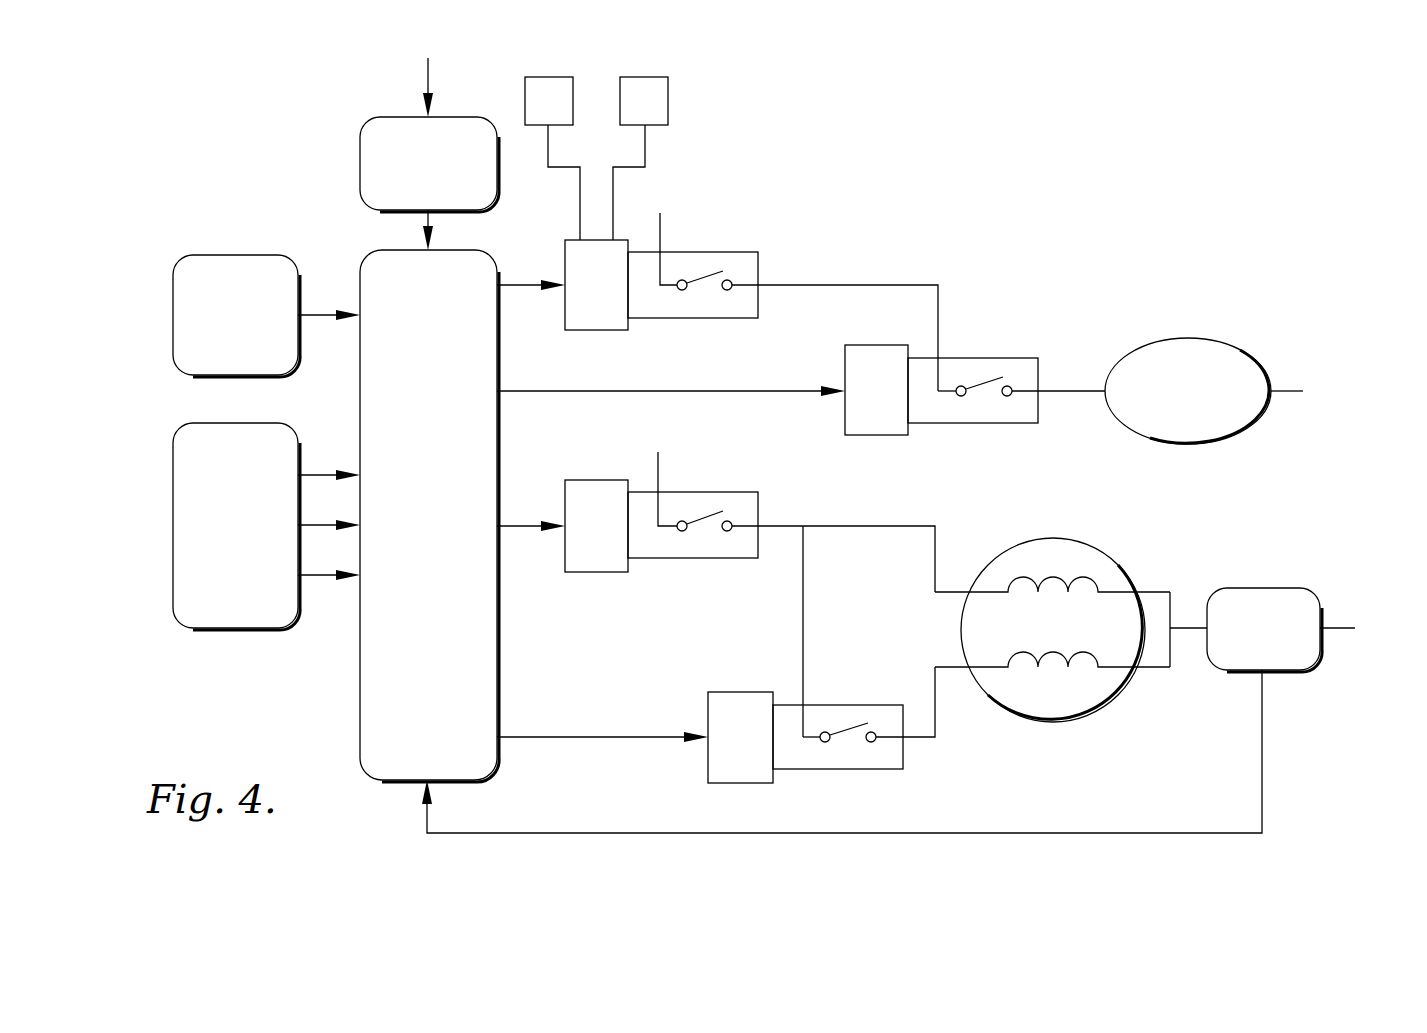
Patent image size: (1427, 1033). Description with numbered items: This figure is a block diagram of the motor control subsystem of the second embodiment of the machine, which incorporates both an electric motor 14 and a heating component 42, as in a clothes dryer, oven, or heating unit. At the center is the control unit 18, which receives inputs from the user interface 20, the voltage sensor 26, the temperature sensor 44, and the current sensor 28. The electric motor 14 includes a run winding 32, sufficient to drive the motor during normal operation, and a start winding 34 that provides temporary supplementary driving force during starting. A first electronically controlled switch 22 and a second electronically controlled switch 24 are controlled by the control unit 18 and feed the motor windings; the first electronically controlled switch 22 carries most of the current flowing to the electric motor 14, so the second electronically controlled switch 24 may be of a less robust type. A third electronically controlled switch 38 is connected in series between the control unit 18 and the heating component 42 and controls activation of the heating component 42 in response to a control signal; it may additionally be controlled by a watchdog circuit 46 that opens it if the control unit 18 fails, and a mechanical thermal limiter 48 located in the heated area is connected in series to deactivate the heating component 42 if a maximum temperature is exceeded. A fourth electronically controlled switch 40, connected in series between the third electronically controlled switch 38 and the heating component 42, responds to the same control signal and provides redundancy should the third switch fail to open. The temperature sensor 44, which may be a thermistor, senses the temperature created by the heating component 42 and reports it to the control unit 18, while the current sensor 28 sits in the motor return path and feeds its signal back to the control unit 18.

The electric motor 14 is at (1071, 630).
The control unit 18 is at (375, 263).
The user interface 20 is at (197, 442).
The first electronically controlled switch 22 is at (598, 562).
The second electronically controlled switch 24 is at (730, 702).
The voltage sensor 26 is at (368, 130).
The current sensor 28 is at (1282, 592).
The run winding 32 is at (1045, 565).
The start winding 34 is at (1053, 680).
The third electronically controlled switch 38 is at (598, 322).
The fourth electronically controlled switch 40 is at (877, 427).
The heating component 42 is at (1202, 348).
The temperature sensor 44 is at (197, 273).
The watchdog circuit 46 is at (540, 85).
The mechanical thermal limiter 48 is at (660, 97).